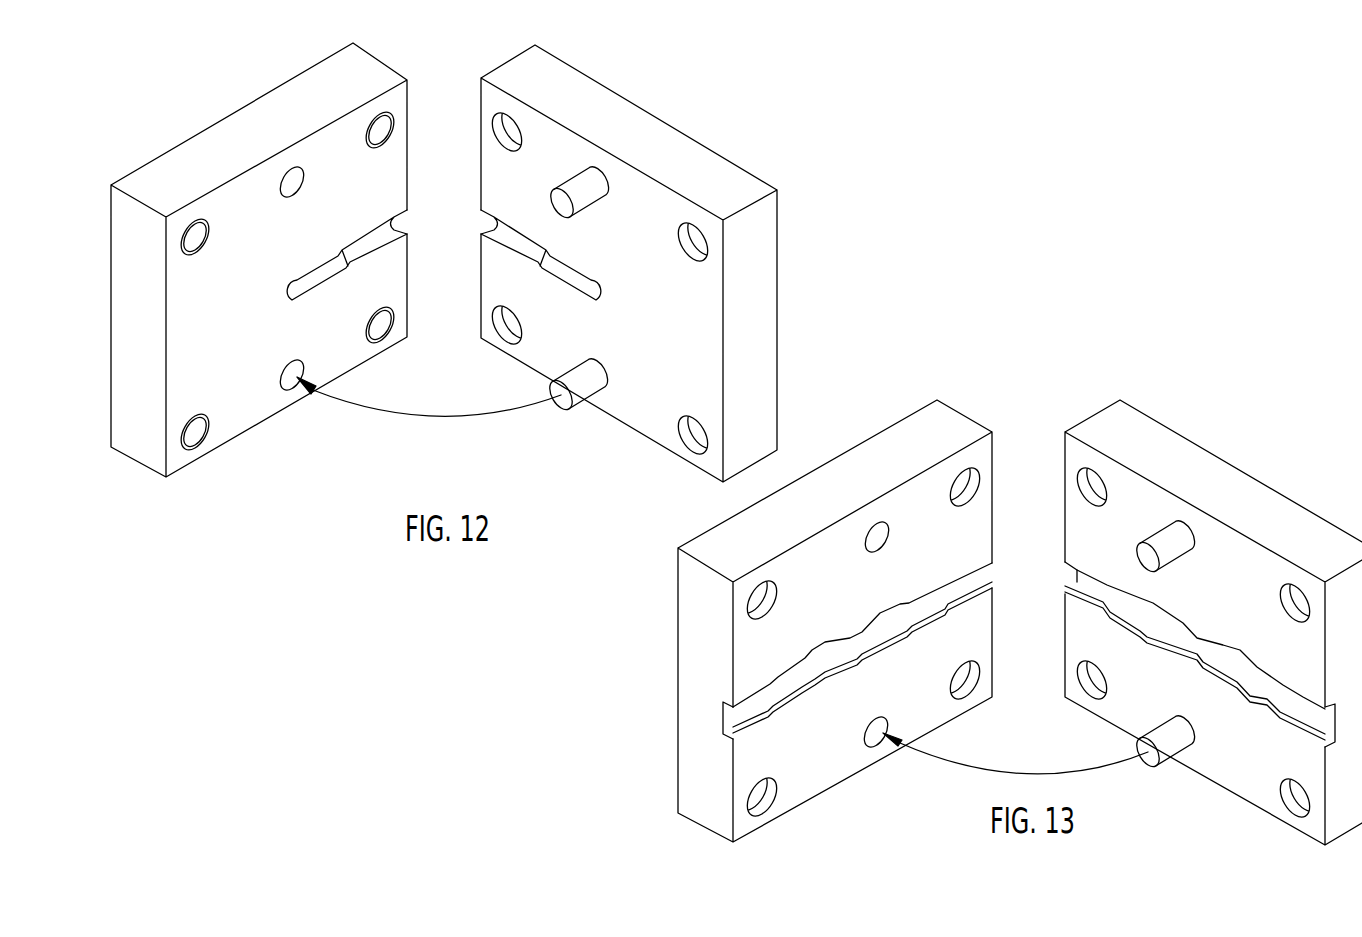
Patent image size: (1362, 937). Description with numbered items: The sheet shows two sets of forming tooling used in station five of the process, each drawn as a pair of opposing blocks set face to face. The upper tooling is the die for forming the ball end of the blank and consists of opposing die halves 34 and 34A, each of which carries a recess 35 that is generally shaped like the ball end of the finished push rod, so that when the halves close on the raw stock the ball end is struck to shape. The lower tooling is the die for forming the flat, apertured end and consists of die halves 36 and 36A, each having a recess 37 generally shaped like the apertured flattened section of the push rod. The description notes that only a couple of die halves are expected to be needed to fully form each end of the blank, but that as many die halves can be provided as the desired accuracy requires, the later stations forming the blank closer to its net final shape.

In FIG. 12, the die half 34 is at (243, 417).
In FIG. 12, the die half 34A is at (643, 420).
In FIG. 12, the recess 35 is at (291, 283).
In FIG. 13, the die half 36 is at (813, 780).
In FIG. 13, the die half 36A is at (1243, 783).
In FIG. 13, the recess 37 is at (892, 623).